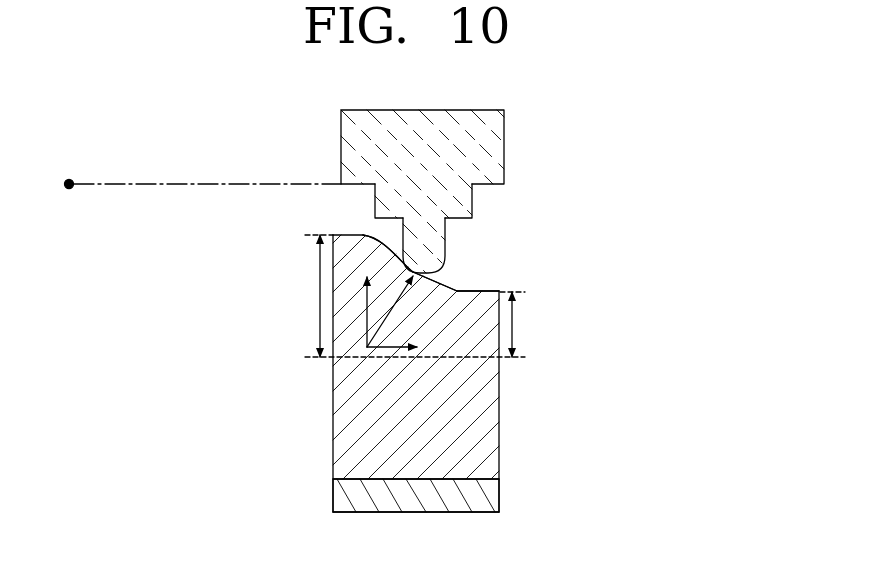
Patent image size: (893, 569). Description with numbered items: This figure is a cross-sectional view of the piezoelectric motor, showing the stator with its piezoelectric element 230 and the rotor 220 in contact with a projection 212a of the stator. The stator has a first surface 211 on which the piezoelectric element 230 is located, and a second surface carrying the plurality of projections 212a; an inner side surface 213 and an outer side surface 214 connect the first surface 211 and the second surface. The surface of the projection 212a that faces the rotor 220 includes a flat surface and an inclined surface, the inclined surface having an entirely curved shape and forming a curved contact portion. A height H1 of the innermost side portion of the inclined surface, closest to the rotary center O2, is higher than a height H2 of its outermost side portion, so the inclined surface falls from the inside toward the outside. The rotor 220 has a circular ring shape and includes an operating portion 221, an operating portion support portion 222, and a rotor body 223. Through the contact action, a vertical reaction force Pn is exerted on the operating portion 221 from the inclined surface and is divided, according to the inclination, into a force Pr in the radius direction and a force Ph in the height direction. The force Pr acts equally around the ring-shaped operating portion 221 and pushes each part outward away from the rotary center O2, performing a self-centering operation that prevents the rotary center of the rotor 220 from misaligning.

The rotor 220 is at (499, 191).
The rotor body 223 is at (504, 137).
The operating portion support portion 222 is at (465, 202).
The operating portion 221 is at (420, 260).
The first surface 211 is at (442, 367).
The projection 212a is at (345, 282).
The inner side surface 213 is at (333, 404).
The outer side surface 214 is at (499, 413).
The piezoelectric element 230 is at (340, 496).
The rotary center O2 is at (183, 185).
The height of innermost side portion H1 is at (405, 296).
The height of outermost side portion H2 is at (525, 324).
The force in height direction Ph is at (352, 312).
The vertical reaction force Pn is at (395, 311).
The force in radius direction Pr is at (405, 346).